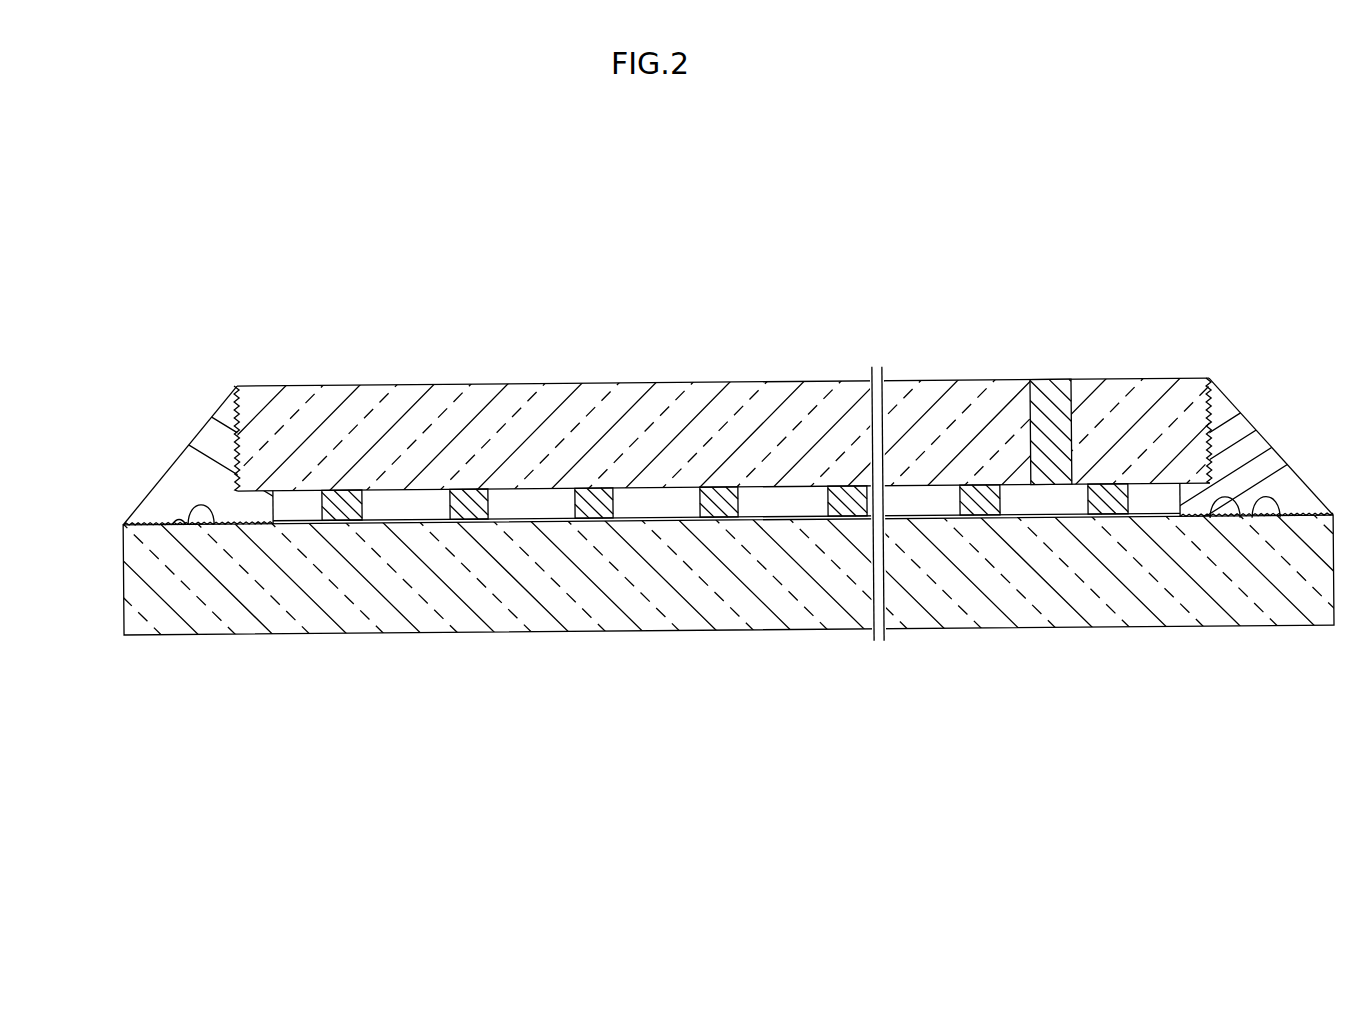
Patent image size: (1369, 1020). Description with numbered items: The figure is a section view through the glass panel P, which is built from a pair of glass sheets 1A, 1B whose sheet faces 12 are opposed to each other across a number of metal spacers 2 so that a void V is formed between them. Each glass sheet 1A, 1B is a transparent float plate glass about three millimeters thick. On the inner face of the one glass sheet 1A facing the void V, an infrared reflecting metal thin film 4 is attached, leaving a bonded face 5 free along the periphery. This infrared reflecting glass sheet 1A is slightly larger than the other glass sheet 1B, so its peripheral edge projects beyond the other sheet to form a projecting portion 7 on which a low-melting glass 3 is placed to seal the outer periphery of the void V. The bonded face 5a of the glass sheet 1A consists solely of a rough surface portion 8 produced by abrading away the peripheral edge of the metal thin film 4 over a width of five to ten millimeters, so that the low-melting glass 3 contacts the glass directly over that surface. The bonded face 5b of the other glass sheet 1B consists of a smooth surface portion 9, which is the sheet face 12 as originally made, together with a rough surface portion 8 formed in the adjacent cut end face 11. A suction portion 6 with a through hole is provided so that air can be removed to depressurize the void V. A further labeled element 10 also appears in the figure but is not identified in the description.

The glass sheet 1A is at (822, 630).
The glass sheet 1B is at (820, 382).
The metal spacers 2 is at (468, 494).
The low-melting glass 3 is at (263, 518).
The metal thin film 4 is at (663, 516).
The bonded face 5 is at (734, 486).
The bonded face 5a is at (221, 520).
The bonded face 5b is at (135, 325).
The suction portion 6 is at (1061, 403).
The projecting portion 7 is at (162, 630).
The rough surface portion 8 is at (233, 419).
The smooth surface portion 9 is at (256, 495).
The sealant bead 10 is at (191, 520).
The cut end face 11 is at (237, 382).
The sheet face 12 is at (537, 494).
The glass panel P is at (706, 232).
The void V is at (645, 503).